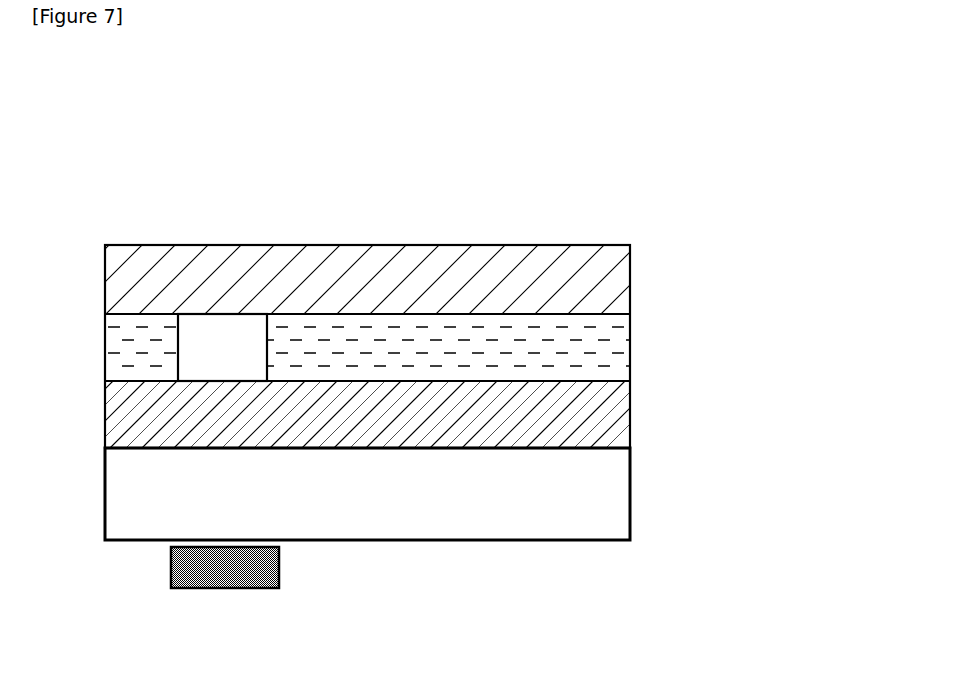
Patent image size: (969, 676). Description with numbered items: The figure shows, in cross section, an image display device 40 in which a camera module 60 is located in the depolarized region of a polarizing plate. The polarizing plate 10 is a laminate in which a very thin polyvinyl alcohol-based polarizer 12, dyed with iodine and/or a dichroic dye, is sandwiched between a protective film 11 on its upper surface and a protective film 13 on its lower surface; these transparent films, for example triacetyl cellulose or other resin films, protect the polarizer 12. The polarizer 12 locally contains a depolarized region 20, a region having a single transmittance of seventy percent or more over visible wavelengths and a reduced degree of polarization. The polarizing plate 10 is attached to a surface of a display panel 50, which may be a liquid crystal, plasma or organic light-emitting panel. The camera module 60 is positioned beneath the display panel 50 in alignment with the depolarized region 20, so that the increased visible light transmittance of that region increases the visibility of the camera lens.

The image display device 40 is at (552, 182).
The polarizing plate 10 is at (733, 255).
The protective film 11 is at (630, 277).
The polarizer 12 is at (630, 340).
The protective film 13 is at (630, 410).
The depolarized region 20 is at (212, 350).
The display panel 50 is at (600, 495).
The camera module 60 is at (272, 588).